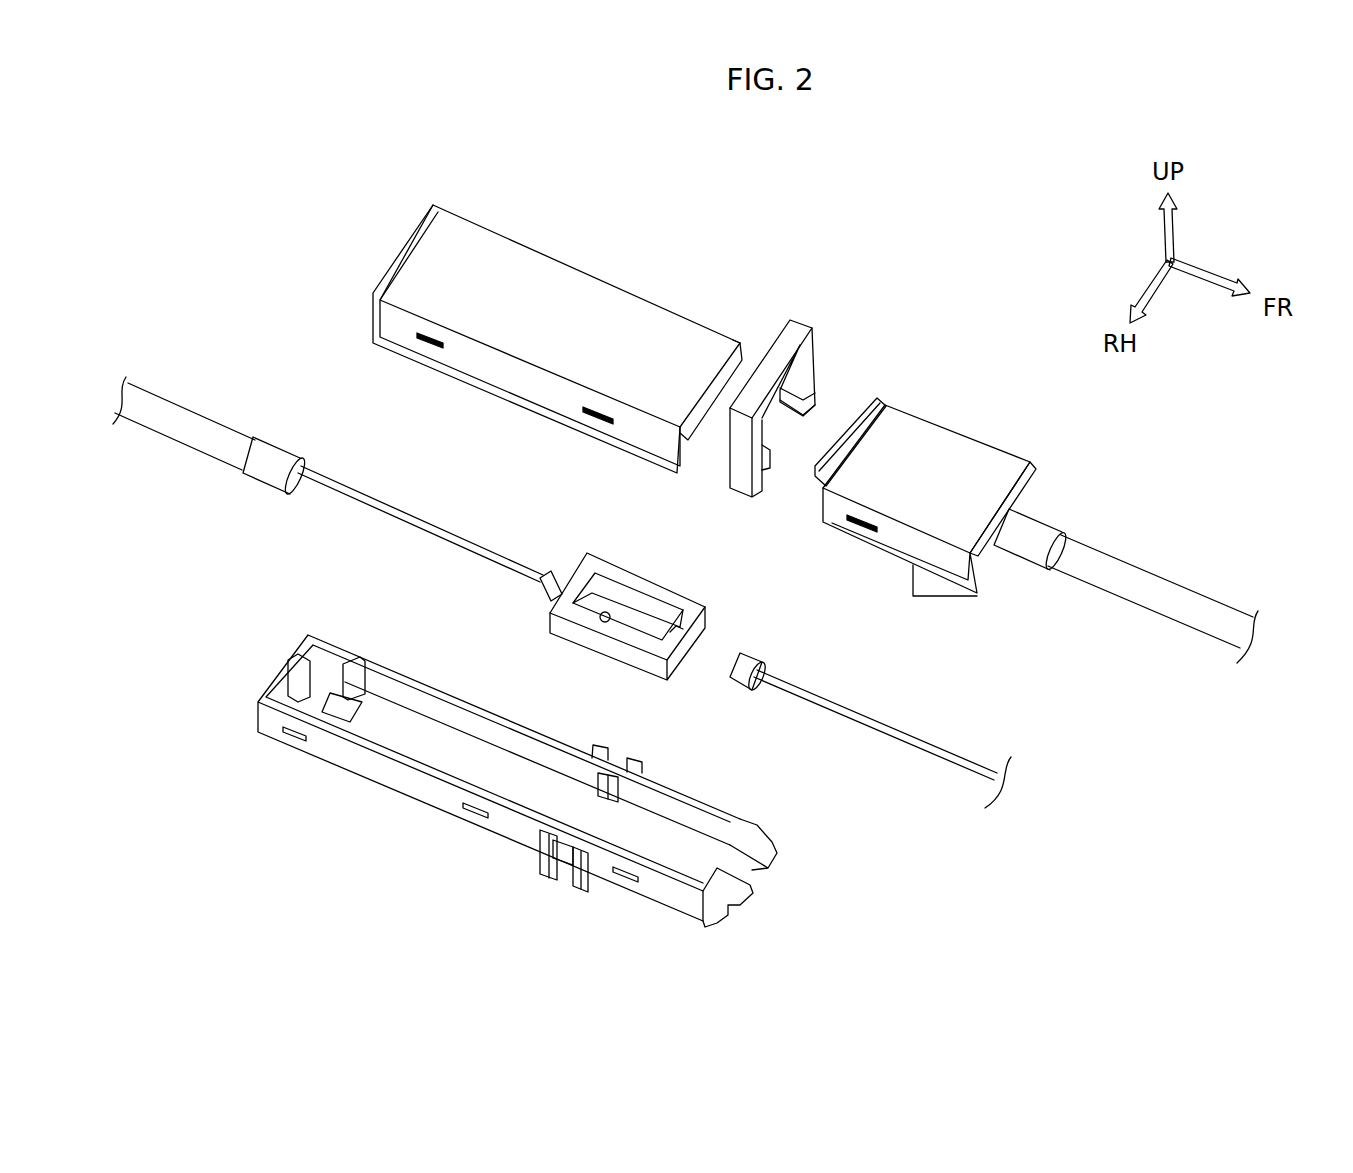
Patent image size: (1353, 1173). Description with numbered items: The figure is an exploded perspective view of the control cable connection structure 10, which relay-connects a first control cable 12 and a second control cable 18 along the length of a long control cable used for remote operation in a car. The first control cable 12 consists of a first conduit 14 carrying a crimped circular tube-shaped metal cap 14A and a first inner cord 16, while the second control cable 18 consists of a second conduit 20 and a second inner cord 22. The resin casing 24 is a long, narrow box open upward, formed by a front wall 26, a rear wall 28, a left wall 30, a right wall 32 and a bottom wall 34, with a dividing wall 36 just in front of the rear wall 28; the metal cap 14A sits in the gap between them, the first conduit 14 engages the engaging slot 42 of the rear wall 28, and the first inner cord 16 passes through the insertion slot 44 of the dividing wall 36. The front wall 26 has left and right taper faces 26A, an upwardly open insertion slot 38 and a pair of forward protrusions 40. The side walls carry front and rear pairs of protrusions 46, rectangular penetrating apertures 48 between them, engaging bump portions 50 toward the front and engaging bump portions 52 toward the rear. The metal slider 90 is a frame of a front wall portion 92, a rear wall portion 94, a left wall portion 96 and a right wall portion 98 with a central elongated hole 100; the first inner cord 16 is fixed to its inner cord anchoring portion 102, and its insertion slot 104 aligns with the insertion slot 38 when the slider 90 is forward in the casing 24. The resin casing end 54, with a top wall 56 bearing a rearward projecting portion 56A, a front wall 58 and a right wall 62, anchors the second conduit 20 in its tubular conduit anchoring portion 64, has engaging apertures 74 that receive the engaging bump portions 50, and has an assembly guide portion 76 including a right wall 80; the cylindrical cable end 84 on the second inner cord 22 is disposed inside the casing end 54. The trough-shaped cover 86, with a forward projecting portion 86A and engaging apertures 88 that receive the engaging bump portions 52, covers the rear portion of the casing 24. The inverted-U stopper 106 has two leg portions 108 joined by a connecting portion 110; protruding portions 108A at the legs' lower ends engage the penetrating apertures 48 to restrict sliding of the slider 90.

The control cable connection structure 10 is at (880, 250).
The first control cable 12 is at (337, 460).
The first conduit 14 is at (158, 432).
The metal cap 14A is at (265, 485).
The first inner cord 16 is at (440, 528).
The second control cable 18 is at (1006, 656).
The second conduit 20 is at (1173, 595).
The second inner cord 22 is at (940, 750).
The casing 24 is at (490, 713).
The front wall 26 is at (727, 918).
The taper faces 26A is at (713, 908).
The rear wall 28 is at (293, 645).
The left wall 30 is at (557, 737).
The right wall 32 is at (417, 787).
The bottom wall 34 is at (420, 727).
The dividing wall 36 is at (343, 663).
The insertion slot 38 is at (752, 838).
The protrusions 40 is at (775, 853).
The engaging slot 42 is at (285, 667).
The insertion slot 44 is at (350, 712).
The protrusions 46 is at (598, 748).
The penetrating apertures 48 is at (598, 788).
The engaging bump portions 50 is at (625, 882).
The engaging bump portions 52 is at (292, 740).
The casing end 54 is at (930, 411).
The top wall 56 is at (960, 460).
The projecting portion 56A is at (860, 413).
The front wall 58 is at (1028, 490).
The right wall 62 is at (908, 547).
The conduit anchoring portion 64 is at (1032, 552).
The engaging apertures 74 is at (853, 527).
The assembly guide portion 76 is at (952, 601).
The right wall 80 is at (925, 587).
The cable end 84 is at (762, 660).
The cover 86 is at (567, 270).
The projecting portion 86A is at (721, 338).
The engaging apertures 88 is at (425, 348).
The slider 90 is at (634, 572).
The front wall portion 92 is at (686, 670).
The rear wall portion 94 is at (570, 563).
The left wall portion 96 is at (680, 590).
The right wall portion 98 is at (620, 660).
The elongated hole 100 is at (608, 622).
The inner cord anchoring portion 102 is at (545, 596).
The insertion slot 104 is at (700, 632).
The stopper 106 is at (777, 385).
The leg portions 108 is at (818, 352).
The protruding portions 108A is at (786, 412).
The connecting portion 110 is at (772, 357).